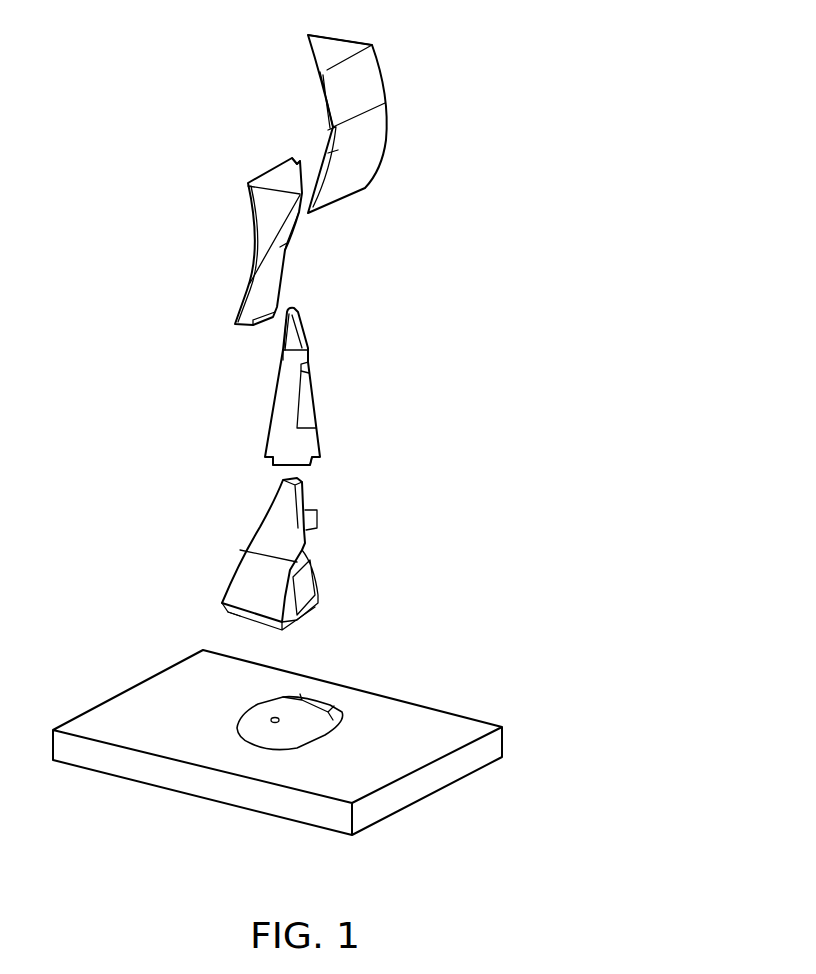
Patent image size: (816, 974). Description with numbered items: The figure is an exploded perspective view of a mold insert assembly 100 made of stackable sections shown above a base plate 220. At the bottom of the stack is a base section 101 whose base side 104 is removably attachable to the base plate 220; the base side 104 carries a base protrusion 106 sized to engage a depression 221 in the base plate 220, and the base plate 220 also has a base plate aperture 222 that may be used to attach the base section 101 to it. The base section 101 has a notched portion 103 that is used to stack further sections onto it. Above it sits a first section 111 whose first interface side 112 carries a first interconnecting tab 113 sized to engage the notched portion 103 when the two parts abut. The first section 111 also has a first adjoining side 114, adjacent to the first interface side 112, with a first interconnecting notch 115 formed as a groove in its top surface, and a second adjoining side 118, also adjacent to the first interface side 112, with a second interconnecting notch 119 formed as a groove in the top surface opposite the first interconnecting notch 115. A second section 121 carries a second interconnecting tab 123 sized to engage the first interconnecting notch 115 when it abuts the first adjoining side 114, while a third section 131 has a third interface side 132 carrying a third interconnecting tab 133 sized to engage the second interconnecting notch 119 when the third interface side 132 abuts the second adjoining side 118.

The mold insert assembly 100 is at (152, 32).
The base section 101 is at (245, 567).
The notched portion 103 is at (313, 513).
The base side 104 is at (237, 617).
The base protrusion 106 is at (268, 627).
The first section 111 is at (283, 428).
The first interface side 112 is at (288, 448).
The first interconnecting tab 113 is at (302, 378).
The first adjoining side 114 is at (312, 393).
The first interconnecting notch 115 is at (298, 332).
The second adjoining side 118 is at (283, 357).
The second interconnecting notch 119 is at (288, 338).
The second section 121 is at (370, 72).
The second interconnecting tab 123 is at (313, 50).
The third section 131 is at (253, 222).
The third interface side 132 is at (278, 258).
The third interconnecting tab 133 is at (312, 167).
The base plate 220 is at (108, 717).
The depression 221 is at (253, 730).
The base plate aperture 222 is at (273, 718).